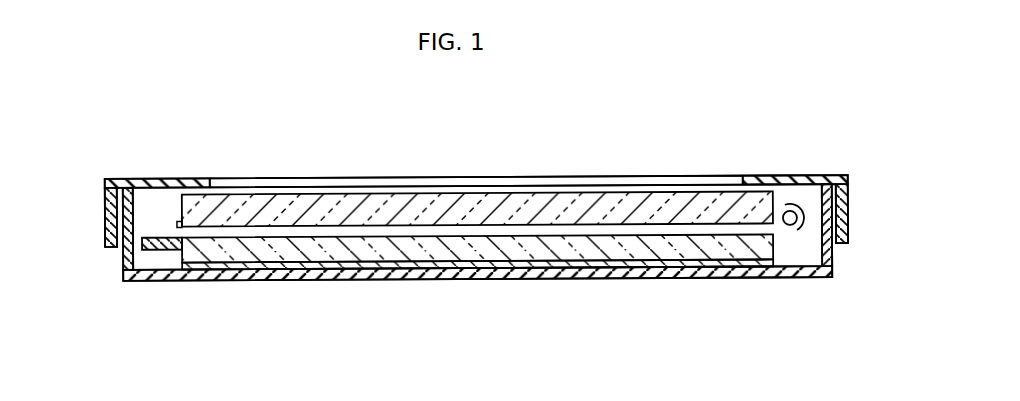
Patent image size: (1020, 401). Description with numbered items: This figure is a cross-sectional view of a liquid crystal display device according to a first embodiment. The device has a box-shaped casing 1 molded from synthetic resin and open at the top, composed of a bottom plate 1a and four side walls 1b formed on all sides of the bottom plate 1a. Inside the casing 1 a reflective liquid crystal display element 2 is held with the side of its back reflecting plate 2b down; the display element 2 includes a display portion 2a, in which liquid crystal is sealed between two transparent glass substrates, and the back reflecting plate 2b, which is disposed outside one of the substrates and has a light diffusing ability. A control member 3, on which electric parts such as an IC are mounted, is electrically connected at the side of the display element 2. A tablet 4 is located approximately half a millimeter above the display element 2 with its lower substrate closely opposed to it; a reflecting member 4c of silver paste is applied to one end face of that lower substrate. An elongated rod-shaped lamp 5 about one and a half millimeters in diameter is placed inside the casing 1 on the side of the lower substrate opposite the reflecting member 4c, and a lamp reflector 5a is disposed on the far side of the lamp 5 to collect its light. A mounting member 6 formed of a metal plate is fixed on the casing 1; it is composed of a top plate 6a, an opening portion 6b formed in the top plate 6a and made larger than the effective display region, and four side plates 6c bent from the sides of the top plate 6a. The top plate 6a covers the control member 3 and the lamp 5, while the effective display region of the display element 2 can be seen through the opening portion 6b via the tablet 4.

The casing 1 is at (475, 283).
The bottom plate 1a is at (378, 283).
The side walls 1b is at (123, 258).
The reflective liquid crystal display element 2 is at (503, 291).
The display portion 2a is at (605, 250).
The back reflecting plate 2b is at (484, 266).
The control member 3 is at (162, 250).
The tablet 4 is at (451, 156).
The reflecting member 4c is at (177, 222).
The lamp 5 is at (797, 231).
The lamp reflector 5a is at (805, 204).
The mounting member 6 is at (480, 168).
The top plate 6a is at (765, 176).
The opening portion 6b is at (325, 177).
The side plates 6c is at (105, 199).